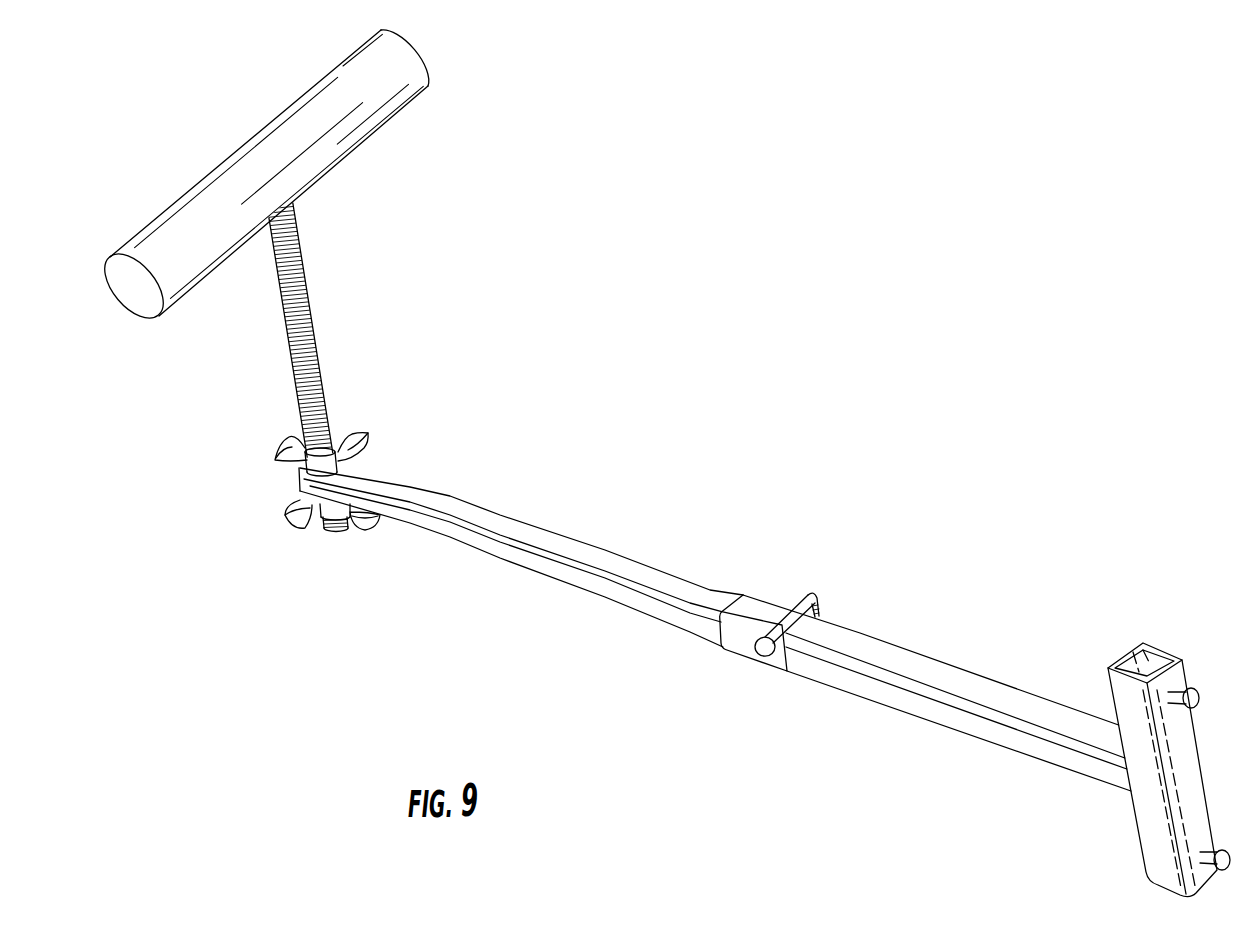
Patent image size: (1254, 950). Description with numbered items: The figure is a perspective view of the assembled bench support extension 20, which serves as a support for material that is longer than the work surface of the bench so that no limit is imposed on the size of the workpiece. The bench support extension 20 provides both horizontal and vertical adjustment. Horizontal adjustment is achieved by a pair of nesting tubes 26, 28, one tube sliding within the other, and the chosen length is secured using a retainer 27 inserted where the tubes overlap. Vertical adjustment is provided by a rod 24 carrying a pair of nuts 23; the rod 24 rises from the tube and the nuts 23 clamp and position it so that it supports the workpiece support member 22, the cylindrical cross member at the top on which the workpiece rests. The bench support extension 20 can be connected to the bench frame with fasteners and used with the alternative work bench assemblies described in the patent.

The bench support extension 20 is at (666, 407).
The workpiece support member 22 is at (381, 134).
The nuts 23 is at (362, 425).
The rod 24 is at (287, 345).
The nesting tube 26 is at (530, 572).
The retainer 27 is at (820, 581).
The nesting tube 28 is at (860, 699).